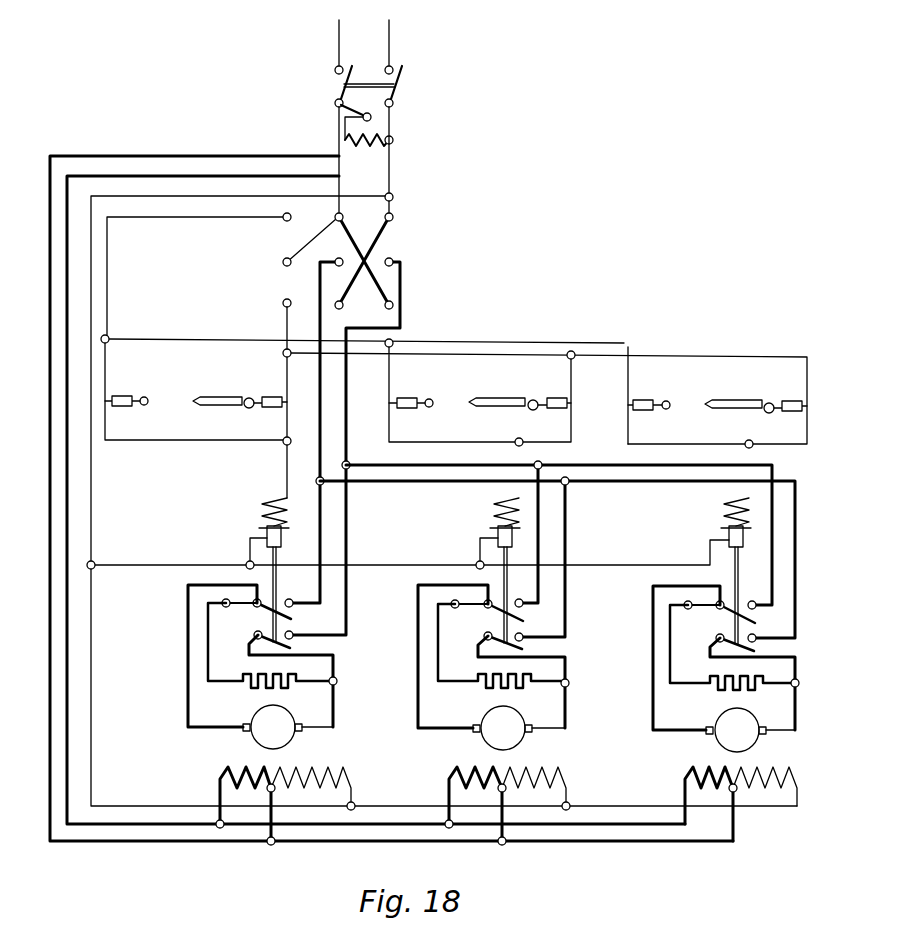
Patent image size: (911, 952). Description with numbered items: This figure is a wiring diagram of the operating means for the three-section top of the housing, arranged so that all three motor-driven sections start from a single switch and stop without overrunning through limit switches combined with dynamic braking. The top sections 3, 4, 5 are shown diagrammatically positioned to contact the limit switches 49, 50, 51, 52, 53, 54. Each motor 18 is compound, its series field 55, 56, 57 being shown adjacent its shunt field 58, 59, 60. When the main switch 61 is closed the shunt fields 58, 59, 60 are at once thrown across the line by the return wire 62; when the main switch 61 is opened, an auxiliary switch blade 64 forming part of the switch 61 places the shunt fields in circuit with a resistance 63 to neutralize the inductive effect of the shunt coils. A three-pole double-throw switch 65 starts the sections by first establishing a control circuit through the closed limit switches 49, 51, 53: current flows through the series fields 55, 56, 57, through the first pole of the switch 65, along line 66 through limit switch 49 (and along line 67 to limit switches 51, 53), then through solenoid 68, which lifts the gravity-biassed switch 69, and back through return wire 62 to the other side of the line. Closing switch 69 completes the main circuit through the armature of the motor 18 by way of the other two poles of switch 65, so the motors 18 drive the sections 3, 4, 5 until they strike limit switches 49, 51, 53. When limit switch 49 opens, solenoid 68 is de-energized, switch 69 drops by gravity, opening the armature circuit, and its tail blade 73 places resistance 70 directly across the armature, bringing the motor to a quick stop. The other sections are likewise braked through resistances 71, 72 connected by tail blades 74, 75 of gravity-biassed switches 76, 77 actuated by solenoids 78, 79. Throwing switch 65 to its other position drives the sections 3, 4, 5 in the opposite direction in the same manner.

The main switch 61 is at (403, 90).
The auxiliary switch blade 64 is at (359, 105).
The resistance 63 is at (366, 147).
The return wire 62 is at (250, 196).
The line 66 is at (240, 214).
The three-pole double-throw switch 65 is at (371, 408).
The line 67 is at (240, 341).
The limit switch 49 is at (122, 396).
The top section 3 is at (230, 397).
The limit switch 50 is at (270, 397).
The limit switch 51 is at (406, 398).
The top section 4 is at (512, 398).
The limit switch 52 is at (556, 398).
The limit switch 53 is at (646, 400).
The top section 5 is at (750, 400).
The limit switch 54 is at (790, 412).
The solenoid 68 is at (263, 507).
The solenoid 78 is at (490, 509).
The solenoid 79 is at (722, 509).
The gravity-biassed switch 69 is at (278, 598).
The gravity-biassed switch 76 is at (507, 600).
The gravity-biassed switch 77 is at (739, 601).
The tail blade 73 is at (238, 611).
The tail blade 74 is at (470, 612).
The tail blade 75 is at (704, 613).
The resistance 70 is at (262, 687).
The resistance 71 is at (492, 686).
The resistance 72 is at (726, 688).
The motor 18 is at (519, 728).
The series field 55 is at (236, 766).
The series field 56 is at (468, 766).
The series field 57 is at (701, 766).
The shunt field 58 is at (322, 766).
The shunt field 59 is at (553, 766).
The shunt field 60 is at (770, 766).